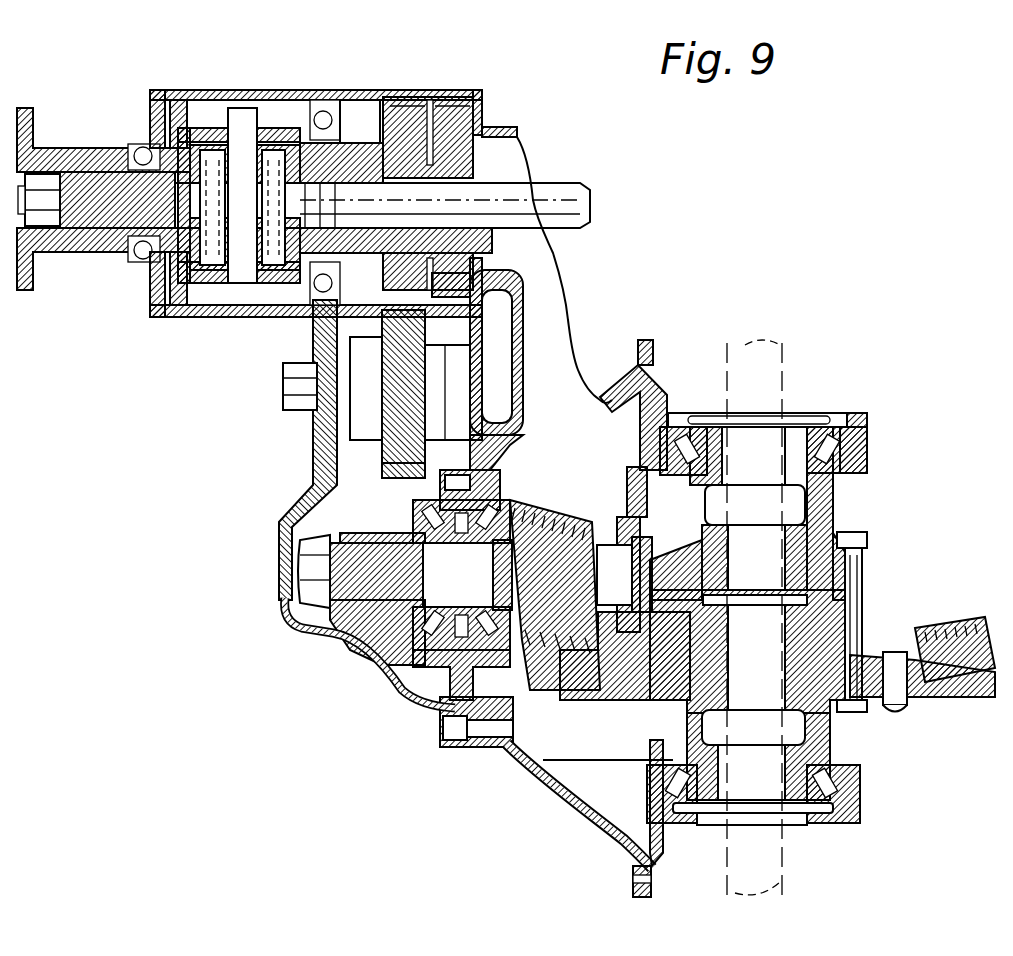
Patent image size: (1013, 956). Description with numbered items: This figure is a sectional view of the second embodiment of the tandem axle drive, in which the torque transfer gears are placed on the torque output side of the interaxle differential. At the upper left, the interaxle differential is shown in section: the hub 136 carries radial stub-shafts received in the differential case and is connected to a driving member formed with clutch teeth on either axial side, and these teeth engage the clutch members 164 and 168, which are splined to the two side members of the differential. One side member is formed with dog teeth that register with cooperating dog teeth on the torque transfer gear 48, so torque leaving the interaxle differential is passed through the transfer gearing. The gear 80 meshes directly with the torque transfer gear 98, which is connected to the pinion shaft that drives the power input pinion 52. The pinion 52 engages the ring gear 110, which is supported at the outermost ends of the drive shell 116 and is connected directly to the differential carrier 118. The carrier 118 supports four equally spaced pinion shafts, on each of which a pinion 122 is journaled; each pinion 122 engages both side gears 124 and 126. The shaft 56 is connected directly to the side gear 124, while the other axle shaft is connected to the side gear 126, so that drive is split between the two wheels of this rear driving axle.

The clutch member 164 is at (210, 140).
The hub 136 is at (240, 125).
The clutch member 168 is at (272, 140).
The torque transfer gear 48 is at (410, 98).
The gear 80 is at (386, 134).
The shaft 56 is at (783, 388).
The power input pinion 52 is at (592, 492).
The pinion 122 is at (695, 585).
The side gear 126 is at (800, 590).
The side gear 124 is at (796, 668).
The drive shell 116 is at (640, 703).
The differential carrier 118 is at (838, 563).
The ring gear 110 is at (975, 600).
The torque transfer gear 98 is at (380, 658).